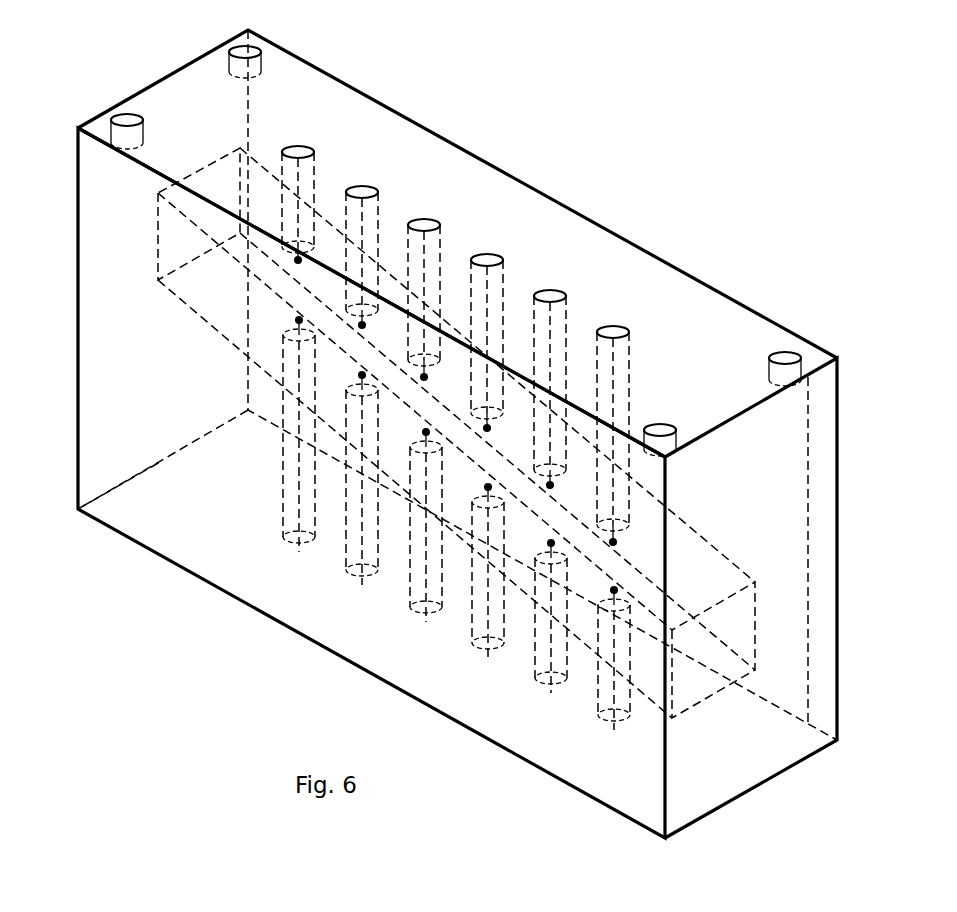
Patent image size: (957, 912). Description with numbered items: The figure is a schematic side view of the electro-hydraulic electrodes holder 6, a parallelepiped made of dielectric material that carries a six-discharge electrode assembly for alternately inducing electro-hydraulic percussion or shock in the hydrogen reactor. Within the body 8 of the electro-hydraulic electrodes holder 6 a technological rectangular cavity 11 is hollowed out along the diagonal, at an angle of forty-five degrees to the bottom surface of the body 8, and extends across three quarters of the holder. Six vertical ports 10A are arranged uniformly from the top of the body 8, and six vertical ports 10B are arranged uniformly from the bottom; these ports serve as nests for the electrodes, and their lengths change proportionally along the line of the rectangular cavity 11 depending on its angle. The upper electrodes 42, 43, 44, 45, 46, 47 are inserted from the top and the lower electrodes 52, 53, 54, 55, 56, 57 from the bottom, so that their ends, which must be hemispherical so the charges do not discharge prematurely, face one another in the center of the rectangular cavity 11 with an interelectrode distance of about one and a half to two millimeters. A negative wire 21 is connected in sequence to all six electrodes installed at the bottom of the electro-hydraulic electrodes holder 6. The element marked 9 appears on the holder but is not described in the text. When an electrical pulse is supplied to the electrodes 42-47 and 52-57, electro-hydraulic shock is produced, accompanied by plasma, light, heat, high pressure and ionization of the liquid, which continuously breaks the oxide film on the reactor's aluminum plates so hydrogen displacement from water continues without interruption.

The electro-hydraulic electrodes holder 6 is at (773, 618).
The body 8 is at (287, 83).
The corner hole 9 is at (790, 357).
The vertical ports 10A is at (293, 143).
The vertical ports 10B is at (293, 538).
The technological rectangular cavity 11 is at (227, 157).
The negative wire 21 is at (808, 528).
The electrode 42 is at (555, 318).
The electrode 43 is at (494, 286).
The electrode 44 is at (430, 240).
The electrode 45 is at (371, 203).
The electrode 46 is at (308, 161).
The electrode 47 is at (617, 360).
The electrode 52 is at (287, 498).
The electrode 53 is at (347, 541).
The electrode 54 is at (415, 582).
The electrode 55 is at (478, 616).
The electrode 56 is at (540, 657).
The electrode 57 is at (601, 692).